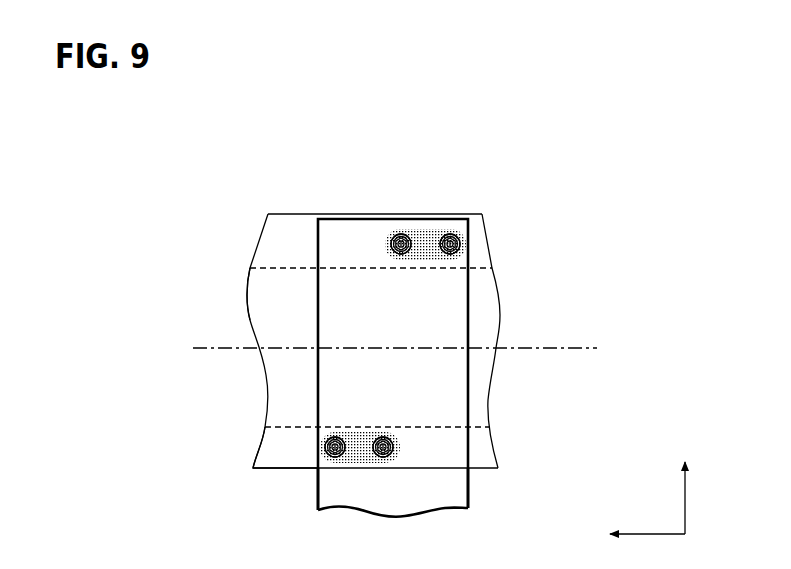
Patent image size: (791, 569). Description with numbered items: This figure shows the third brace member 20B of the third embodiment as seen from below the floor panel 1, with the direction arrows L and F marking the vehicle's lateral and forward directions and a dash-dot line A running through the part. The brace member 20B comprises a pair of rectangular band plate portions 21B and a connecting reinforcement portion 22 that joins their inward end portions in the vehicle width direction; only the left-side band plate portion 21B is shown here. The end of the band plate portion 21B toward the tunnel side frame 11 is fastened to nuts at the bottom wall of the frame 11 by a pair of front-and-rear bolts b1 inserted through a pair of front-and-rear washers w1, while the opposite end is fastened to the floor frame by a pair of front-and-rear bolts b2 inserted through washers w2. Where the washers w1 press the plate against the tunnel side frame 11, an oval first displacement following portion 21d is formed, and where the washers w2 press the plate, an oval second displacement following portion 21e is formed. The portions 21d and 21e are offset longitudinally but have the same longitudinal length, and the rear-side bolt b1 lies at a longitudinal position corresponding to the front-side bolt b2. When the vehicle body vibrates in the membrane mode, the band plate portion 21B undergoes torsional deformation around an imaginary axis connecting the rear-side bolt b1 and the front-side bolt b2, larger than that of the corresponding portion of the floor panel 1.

The third brace member 20B is at (308, 234).
The floor panel 1 is at (263, 292).
The tunnel side frame 11 is at (277, 450).
The band plate portion 21B is at (340, 338).
The connecting reinforcement portion 22 is at (450, 487).
The second displacement following portion 21e is at (391, 241).
The first displacement following portion 21d is at (396, 436).
The washer w2 is at (450, 244).
The bolt b2 is at (450, 244).
The washer w1 is at (383, 447).
The bolt b1 is at (383, 447).
The center axis A is at (565, 348).
The left direction L is at (685, 490).
The front direction F is at (640, 536).